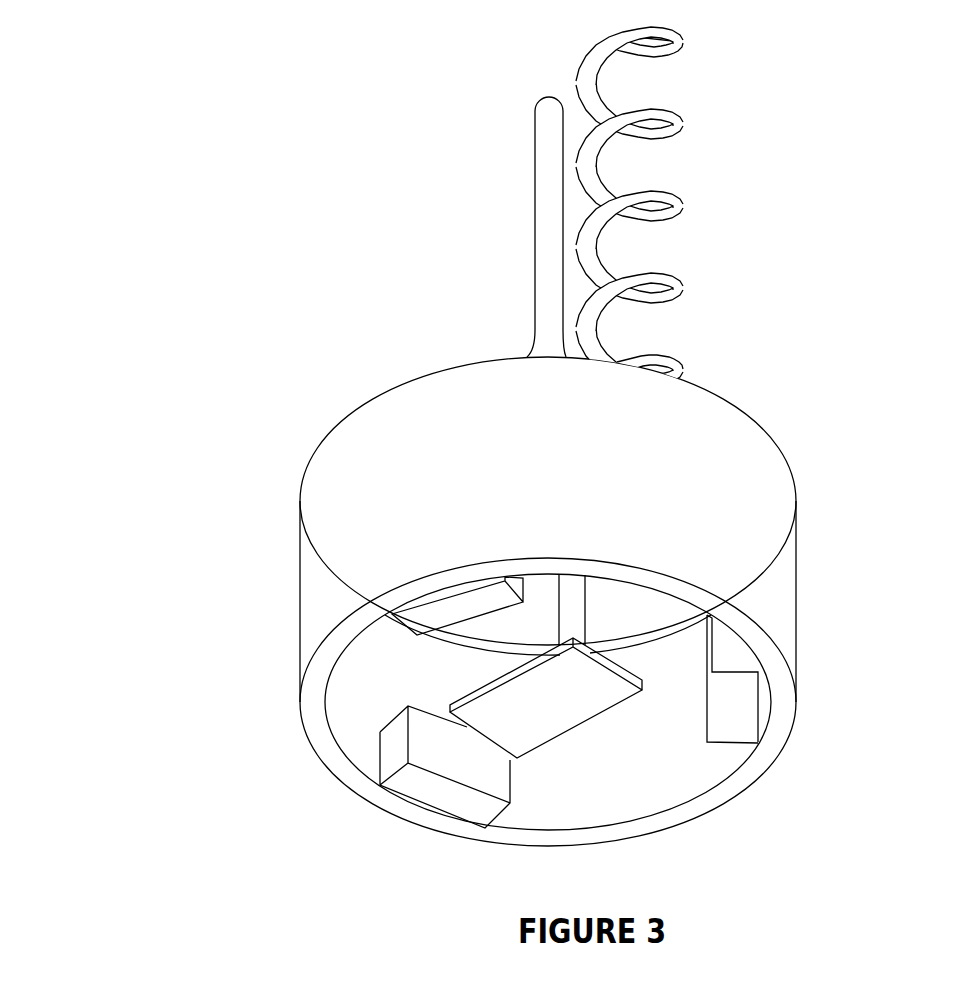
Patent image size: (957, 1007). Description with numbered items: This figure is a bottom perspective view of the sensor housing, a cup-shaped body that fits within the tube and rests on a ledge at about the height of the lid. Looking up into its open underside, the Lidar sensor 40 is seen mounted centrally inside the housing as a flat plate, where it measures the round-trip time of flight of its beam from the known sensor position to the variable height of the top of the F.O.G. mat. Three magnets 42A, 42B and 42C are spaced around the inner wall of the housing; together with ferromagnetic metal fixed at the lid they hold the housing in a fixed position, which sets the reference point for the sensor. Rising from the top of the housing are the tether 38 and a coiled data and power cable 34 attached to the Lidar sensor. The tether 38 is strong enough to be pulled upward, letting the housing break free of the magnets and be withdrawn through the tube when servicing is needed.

The coiled data and power cable 34 is at (670, 207).
The tether 38 is at (547, 268).
The Lidar sensor 40 is at (577, 707).
The magnet 42A is at (450, 795).
The magnet 42B is at (740, 705).
The magnet 42C is at (453, 602).